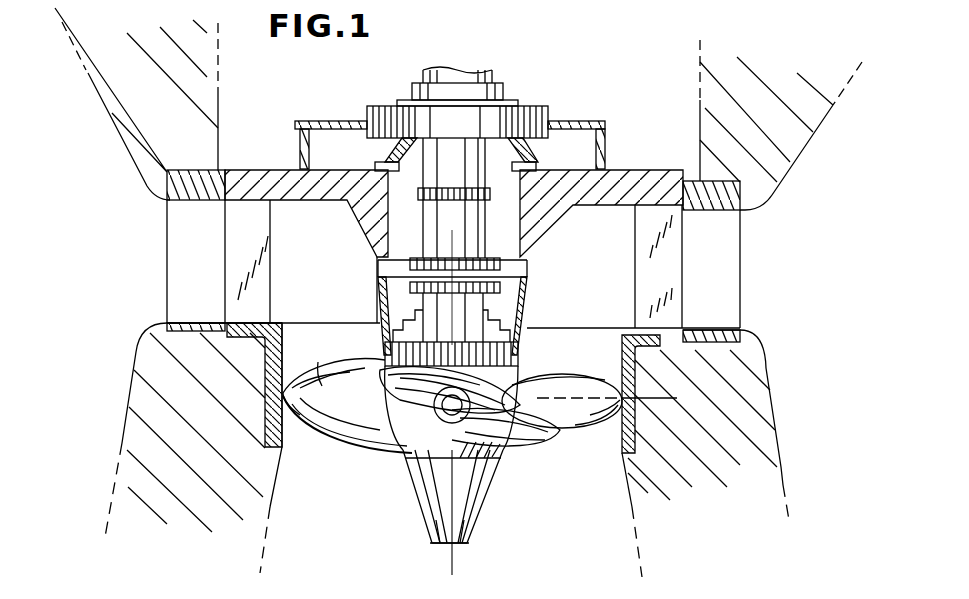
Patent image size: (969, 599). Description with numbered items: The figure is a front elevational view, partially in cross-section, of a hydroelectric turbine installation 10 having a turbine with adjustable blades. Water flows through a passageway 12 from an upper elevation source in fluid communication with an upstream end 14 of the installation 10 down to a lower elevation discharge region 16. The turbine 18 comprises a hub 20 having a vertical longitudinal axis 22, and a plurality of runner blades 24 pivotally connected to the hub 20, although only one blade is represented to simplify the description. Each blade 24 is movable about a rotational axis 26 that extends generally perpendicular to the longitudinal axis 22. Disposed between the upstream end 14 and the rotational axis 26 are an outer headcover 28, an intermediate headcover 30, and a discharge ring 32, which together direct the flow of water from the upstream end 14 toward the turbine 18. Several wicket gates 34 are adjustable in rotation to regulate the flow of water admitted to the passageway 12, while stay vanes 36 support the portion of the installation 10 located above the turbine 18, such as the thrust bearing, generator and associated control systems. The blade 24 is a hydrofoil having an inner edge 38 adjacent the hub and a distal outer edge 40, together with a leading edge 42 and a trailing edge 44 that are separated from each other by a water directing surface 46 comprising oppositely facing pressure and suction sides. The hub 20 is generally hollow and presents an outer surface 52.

The hydroelectric turbine installation 10 is at (566, 97).
The passageway 12 is at (326, 515).
The upstream end 14 is at (138, 278).
The discharge region 16 is at (348, 563).
The turbine 18 is at (506, 500).
The hub 20 is at (403, 485).
The longitudinal axis 22 is at (455, 567).
The runner blade 24 is at (320, 373).
The rotational axis 26 is at (577, 407).
The outer headcover 28 is at (615, 210).
The intermediate headcover 30 is at (548, 238).
The discharge ring 32 is at (287, 323).
The wicket gate 34 is at (257, 227).
The stay vane 36 is at (723, 297).
The inner edge 38 is at (393, 450).
The distal outer edge 40 is at (508, 457).
The leading edge 42 is at (572, 387).
The trailing edge 44 is at (340, 440).
The water directing surface 46 is at (327, 403).
The outer surface 52 is at (418, 522).